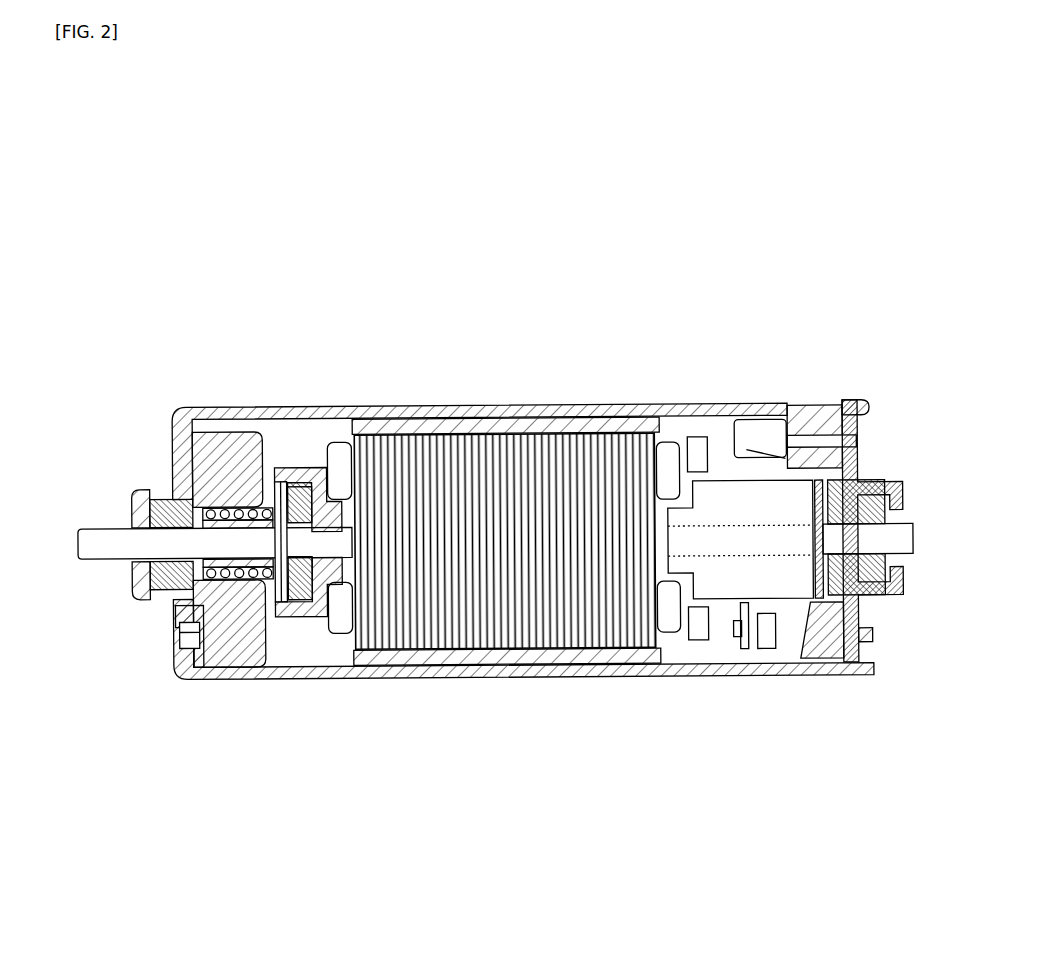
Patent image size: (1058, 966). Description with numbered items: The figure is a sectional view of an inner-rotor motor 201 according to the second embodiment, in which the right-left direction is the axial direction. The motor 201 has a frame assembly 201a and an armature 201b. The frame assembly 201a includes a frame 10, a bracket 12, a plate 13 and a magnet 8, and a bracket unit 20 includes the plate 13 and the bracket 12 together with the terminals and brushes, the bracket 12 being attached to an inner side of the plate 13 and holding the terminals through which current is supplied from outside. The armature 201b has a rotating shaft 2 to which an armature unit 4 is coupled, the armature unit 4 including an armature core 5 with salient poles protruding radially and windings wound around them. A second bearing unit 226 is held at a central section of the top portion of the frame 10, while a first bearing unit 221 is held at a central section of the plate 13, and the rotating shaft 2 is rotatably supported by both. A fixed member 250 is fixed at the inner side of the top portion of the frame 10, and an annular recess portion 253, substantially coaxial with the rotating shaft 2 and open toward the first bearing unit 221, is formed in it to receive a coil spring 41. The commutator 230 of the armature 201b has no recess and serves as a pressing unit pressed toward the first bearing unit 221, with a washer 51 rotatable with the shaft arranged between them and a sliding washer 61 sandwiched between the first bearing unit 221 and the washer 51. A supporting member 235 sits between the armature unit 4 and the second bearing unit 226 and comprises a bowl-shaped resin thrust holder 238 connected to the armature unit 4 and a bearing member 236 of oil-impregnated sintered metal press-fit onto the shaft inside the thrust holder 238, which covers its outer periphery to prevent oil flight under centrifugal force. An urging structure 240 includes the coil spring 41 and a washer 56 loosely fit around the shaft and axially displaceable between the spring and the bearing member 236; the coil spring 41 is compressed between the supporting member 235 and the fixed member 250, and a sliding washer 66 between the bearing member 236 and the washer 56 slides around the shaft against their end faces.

The rotating shaft 2 is at (103, 541).
The armature unit 4 is at (318, 418).
The armature core 5 is at (413, 432).
The magnet 8 is at (620, 413).
The frame 10 is at (555, 680).
The bracket 12 is at (835, 410).
The plate 13 is at (890, 486).
The bracket unit 20 is at (882, 428).
The coil spring 41 is at (192, 678).
The washer 51 is at (818, 612).
The washer 56 is at (237, 678).
The sliding washer 61 is at (874, 674).
The sliding washer 66 is at (277, 617).
The inner-rotor motor 201 is at (200, 207).
The frame assembly 201a is at (473, 392).
The armature 201b is at (118, 567).
The first bearing unit 221 is at (893, 598).
The second bearing unit 226 is at (188, 608).
The commutator 230 is at (723, 612).
The supporting member 235 is at (438, 766).
The bearing member 236 is at (284, 604).
The thrust holder 238 is at (314, 602).
The urging structure 240 is at (262, 768).
The fixed member 250 is at (245, 418).
The recess portion 253 is at (207, 503).